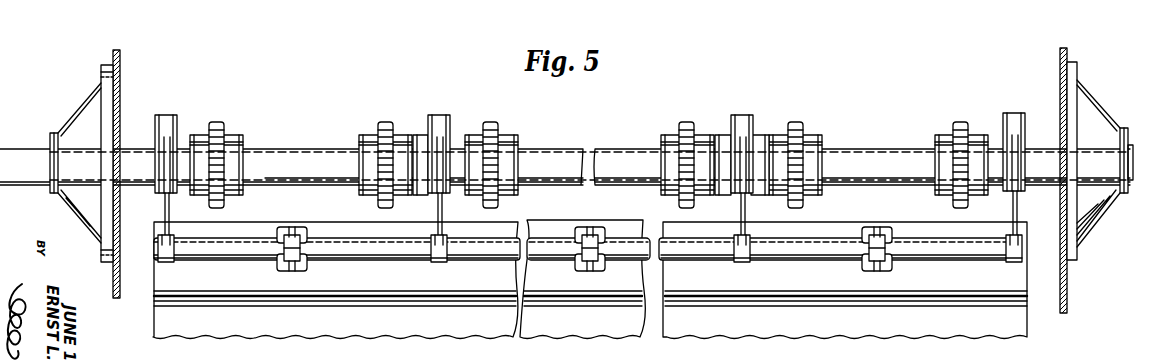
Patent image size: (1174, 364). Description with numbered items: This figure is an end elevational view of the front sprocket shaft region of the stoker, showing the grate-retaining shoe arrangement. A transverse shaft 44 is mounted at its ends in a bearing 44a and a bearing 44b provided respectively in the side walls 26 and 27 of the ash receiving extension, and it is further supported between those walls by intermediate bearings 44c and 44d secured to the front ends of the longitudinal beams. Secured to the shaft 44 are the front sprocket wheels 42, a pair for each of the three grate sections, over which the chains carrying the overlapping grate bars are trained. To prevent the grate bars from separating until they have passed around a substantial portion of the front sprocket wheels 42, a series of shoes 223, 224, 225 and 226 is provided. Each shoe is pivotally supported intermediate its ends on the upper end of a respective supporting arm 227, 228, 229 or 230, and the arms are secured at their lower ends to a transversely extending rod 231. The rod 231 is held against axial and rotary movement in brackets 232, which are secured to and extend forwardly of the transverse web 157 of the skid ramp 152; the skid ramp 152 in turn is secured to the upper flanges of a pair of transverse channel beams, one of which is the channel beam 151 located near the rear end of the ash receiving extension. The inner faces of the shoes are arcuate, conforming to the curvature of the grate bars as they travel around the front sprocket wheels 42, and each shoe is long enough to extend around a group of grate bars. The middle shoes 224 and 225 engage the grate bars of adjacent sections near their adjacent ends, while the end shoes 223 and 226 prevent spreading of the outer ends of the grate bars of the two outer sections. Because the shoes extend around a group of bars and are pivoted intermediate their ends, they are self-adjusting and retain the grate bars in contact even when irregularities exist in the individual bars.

The side wall 26 is at (114, 276).
The side wall 27 is at (1061, 290).
The front sprocket wheel 42 is at (218, 128).
The shaft 44 is at (279, 157).
The bearing 44a is at (82, 218).
The bearing 44b is at (1084, 221).
The intermediate bearing 44c is at (421, 193).
The intermediate bearing 44d is at (728, 195).
The channel beam 151 is at (262, 332).
The skid ramp 152 is at (156, 294).
The transverse web 157 is at (167, 279).
The shoe 223 is at (167, 122).
The shoe 224 is at (440, 130).
The shoe 225 is at (743, 128).
The shoe 226 is at (1013, 125).
The supporting arm 227 is at (169, 212).
The supporting arm 228 is at (441, 212).
The supporting arm 229 is at (747, 212).
The supporting arm 230 is at (1016, 206).
The rod 231 is at (336, 250).
The bracket 232 is at (284, 264).